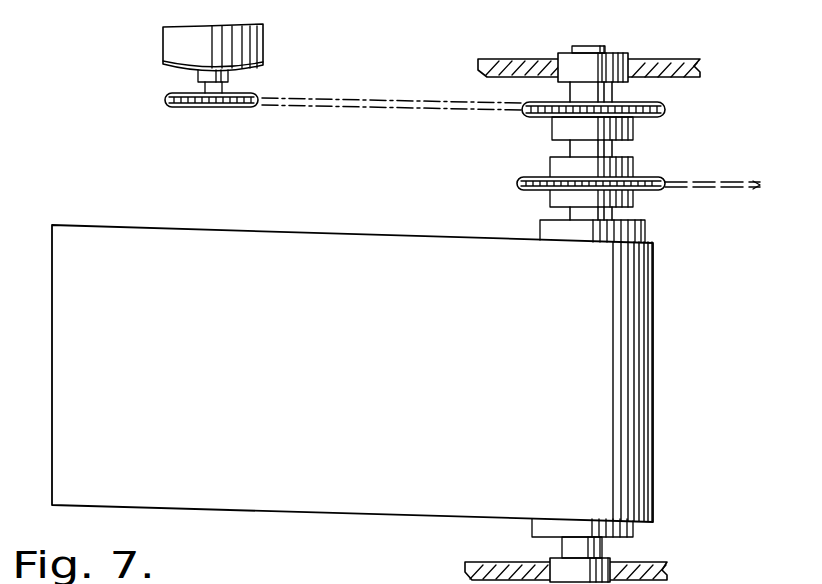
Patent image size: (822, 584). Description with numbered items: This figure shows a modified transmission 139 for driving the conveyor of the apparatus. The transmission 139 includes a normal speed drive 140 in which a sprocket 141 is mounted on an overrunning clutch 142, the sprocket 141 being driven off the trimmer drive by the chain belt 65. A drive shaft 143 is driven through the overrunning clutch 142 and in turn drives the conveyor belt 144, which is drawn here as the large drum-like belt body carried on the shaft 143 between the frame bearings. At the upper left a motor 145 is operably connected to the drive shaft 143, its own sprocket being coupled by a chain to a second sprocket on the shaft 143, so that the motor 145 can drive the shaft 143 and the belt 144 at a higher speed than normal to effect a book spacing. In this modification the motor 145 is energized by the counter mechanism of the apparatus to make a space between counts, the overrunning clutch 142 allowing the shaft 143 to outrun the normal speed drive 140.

The chain belt 65 is at (718, 191).
The modified transmission 139 is at (417, 66).
The normal speed drive 140 is at (697, 152).
The sprocket 141 is at (655, 182).
The overrunning clutch 142 is at (558, 165).
The drive shaft 143 is at (575, 213).
The conveyor belt 144 is at (380, 213).
The motor 145 is at (264, 50).